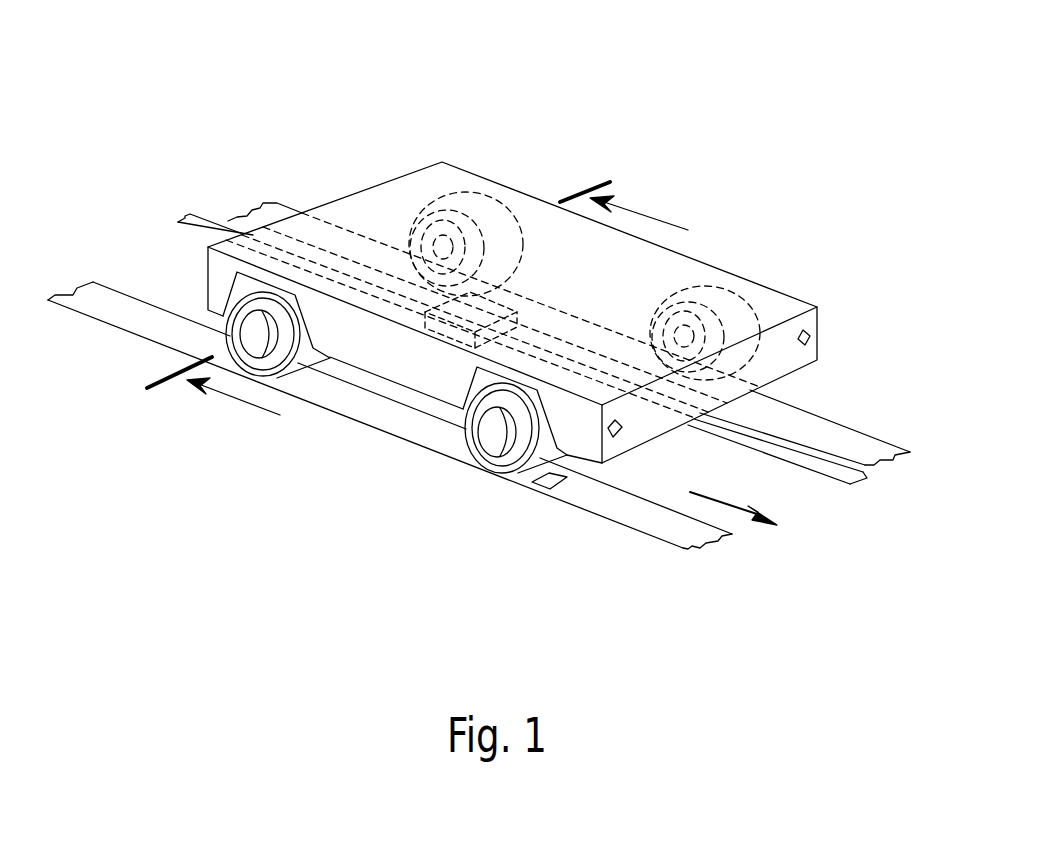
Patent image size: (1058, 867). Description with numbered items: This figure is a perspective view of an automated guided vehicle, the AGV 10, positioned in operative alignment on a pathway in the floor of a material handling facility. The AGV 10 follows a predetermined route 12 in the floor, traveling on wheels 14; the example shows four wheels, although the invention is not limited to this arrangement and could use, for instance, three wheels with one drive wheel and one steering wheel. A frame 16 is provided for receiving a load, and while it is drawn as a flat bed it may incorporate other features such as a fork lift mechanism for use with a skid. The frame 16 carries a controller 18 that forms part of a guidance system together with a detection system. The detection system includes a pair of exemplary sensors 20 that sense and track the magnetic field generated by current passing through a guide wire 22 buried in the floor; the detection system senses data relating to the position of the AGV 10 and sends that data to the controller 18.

The AGV 10 is at (710, 163).
The predetermined route 12 is at (828, 433).
The wheels 14 is at (238, 315).
The frame 16 is at (592, 278).
The controller 18 is at (462, 328).
The sensors 20 is at (817, 338).
The guide wire 22 is at (547, 483).